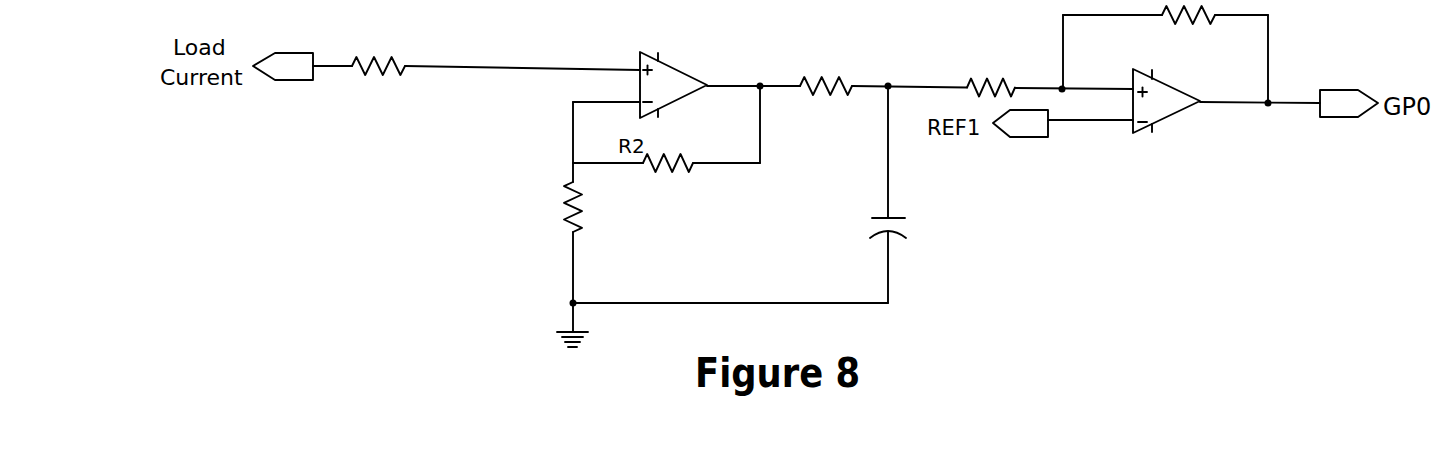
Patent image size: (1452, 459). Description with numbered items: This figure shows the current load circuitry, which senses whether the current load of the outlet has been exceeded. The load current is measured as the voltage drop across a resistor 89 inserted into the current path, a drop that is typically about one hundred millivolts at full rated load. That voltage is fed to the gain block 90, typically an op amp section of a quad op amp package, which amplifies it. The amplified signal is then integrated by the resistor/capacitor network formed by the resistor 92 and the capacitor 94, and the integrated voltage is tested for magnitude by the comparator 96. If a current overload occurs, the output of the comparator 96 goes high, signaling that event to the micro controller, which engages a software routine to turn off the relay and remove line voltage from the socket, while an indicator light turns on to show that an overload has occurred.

The resistor 89 is at (398, 66).
The gain block 90 is at (677, 64).
The resistor of the resistor/capacitor network 92 is at (852, 80).
The capacitor of the resistor/capacitor network 94 is at (871, 217).
The comparator 96 is at (1170, 85).